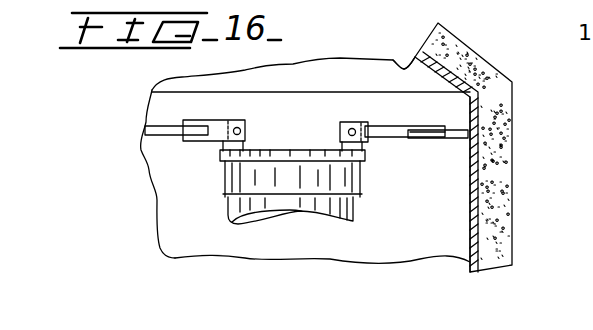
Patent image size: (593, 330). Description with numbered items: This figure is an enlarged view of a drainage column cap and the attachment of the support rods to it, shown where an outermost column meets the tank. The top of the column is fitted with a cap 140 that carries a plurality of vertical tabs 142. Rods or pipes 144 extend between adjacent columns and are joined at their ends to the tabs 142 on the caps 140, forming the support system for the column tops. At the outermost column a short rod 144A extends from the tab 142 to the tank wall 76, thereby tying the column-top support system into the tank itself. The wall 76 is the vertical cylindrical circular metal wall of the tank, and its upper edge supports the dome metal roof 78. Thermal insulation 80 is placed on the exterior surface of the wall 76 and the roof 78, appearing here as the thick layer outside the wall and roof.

The wall 76 is at (467, 244).
The dome metal roof 78 is at (400, 67).
The thermal insulation 80 is at (498, 189).
The cap 140 is at (195, 167).
The vertical tabs 142 is at (341, 145).
The rods or pipes 144 is at (162, 128).
The short rods 144A is at (410, 138).